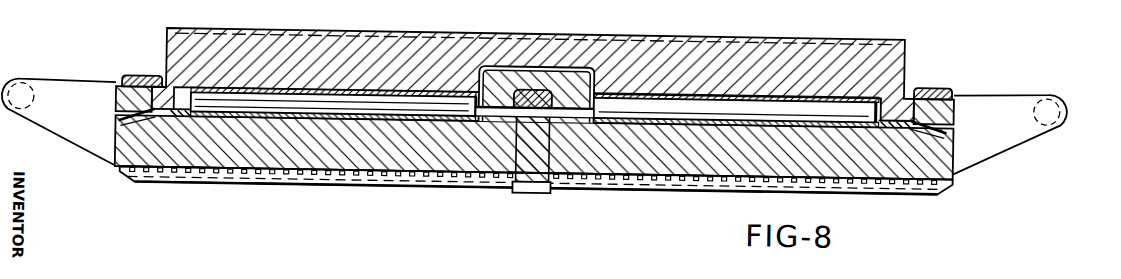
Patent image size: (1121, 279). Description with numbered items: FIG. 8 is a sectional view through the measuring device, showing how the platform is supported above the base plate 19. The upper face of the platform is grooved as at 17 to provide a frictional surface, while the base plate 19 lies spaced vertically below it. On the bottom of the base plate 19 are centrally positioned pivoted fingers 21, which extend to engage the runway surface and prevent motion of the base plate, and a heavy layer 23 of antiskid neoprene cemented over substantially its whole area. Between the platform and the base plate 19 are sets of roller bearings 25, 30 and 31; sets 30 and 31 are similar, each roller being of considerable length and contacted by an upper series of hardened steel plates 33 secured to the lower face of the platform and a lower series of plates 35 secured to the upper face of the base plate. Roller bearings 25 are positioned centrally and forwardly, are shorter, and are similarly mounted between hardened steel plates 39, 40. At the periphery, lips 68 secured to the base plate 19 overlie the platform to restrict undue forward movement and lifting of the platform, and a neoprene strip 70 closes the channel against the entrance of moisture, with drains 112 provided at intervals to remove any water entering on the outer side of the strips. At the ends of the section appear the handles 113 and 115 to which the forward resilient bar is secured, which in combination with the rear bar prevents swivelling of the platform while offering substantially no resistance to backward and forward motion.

The grooves 17 is at (283, 25).
The base plate 19 is at (335, 160).
The pivoted fingers 21 is at (516, 171).
The layer of antiskid neoprene 23 is at (675, 185).
The roller bearings 25 is at (548, 29).
The roller bearing set 30 is at (643, 98).
The roller bearing set 31 is at (390, 100).
The hardened steel plates 33 is at (357, 87).
The hardened steel plates 35 is at (258, 117).
The hardened steel plate 39 is at (572, 80).
The hardened steel plate 40 is at (573, 93).
The lips 68 is at (125, 76).
The neoprene strip 70 is at (165, 117).
The drains 112 is at (118, 127).
The handle 113 is at (76, 85).
The handle 115 is at (1011, 93).